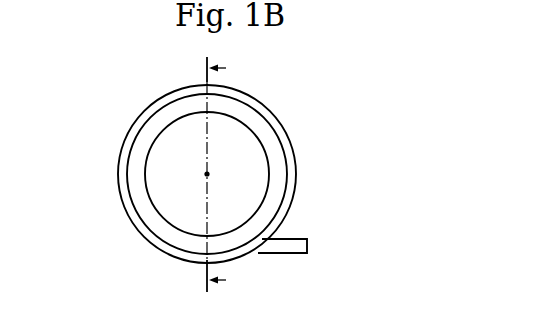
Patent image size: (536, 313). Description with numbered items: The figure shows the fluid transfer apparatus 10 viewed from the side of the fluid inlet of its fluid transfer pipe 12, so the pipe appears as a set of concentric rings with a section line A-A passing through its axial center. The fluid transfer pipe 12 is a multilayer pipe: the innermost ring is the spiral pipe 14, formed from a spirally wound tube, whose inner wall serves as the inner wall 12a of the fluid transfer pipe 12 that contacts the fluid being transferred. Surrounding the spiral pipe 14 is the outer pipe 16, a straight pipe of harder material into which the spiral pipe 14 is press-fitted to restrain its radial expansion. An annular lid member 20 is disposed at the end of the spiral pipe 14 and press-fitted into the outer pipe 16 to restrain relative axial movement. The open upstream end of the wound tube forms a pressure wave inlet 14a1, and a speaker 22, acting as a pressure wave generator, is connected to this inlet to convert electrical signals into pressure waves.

The fluid transfer apparatus 10 is at (247, 172).
The fluid transfer pipe 12 is at (278, 103).
The inner wall 12a is at (270, 182).
The spiral pipe 14 is at (160, 115).
The pressure wave inlet 14a1 is at (260, 256).
The outer pipe 16 is at (288, 147).
The lid member 20 is at (136, 156).
The speaker 22 is at (307, 240).